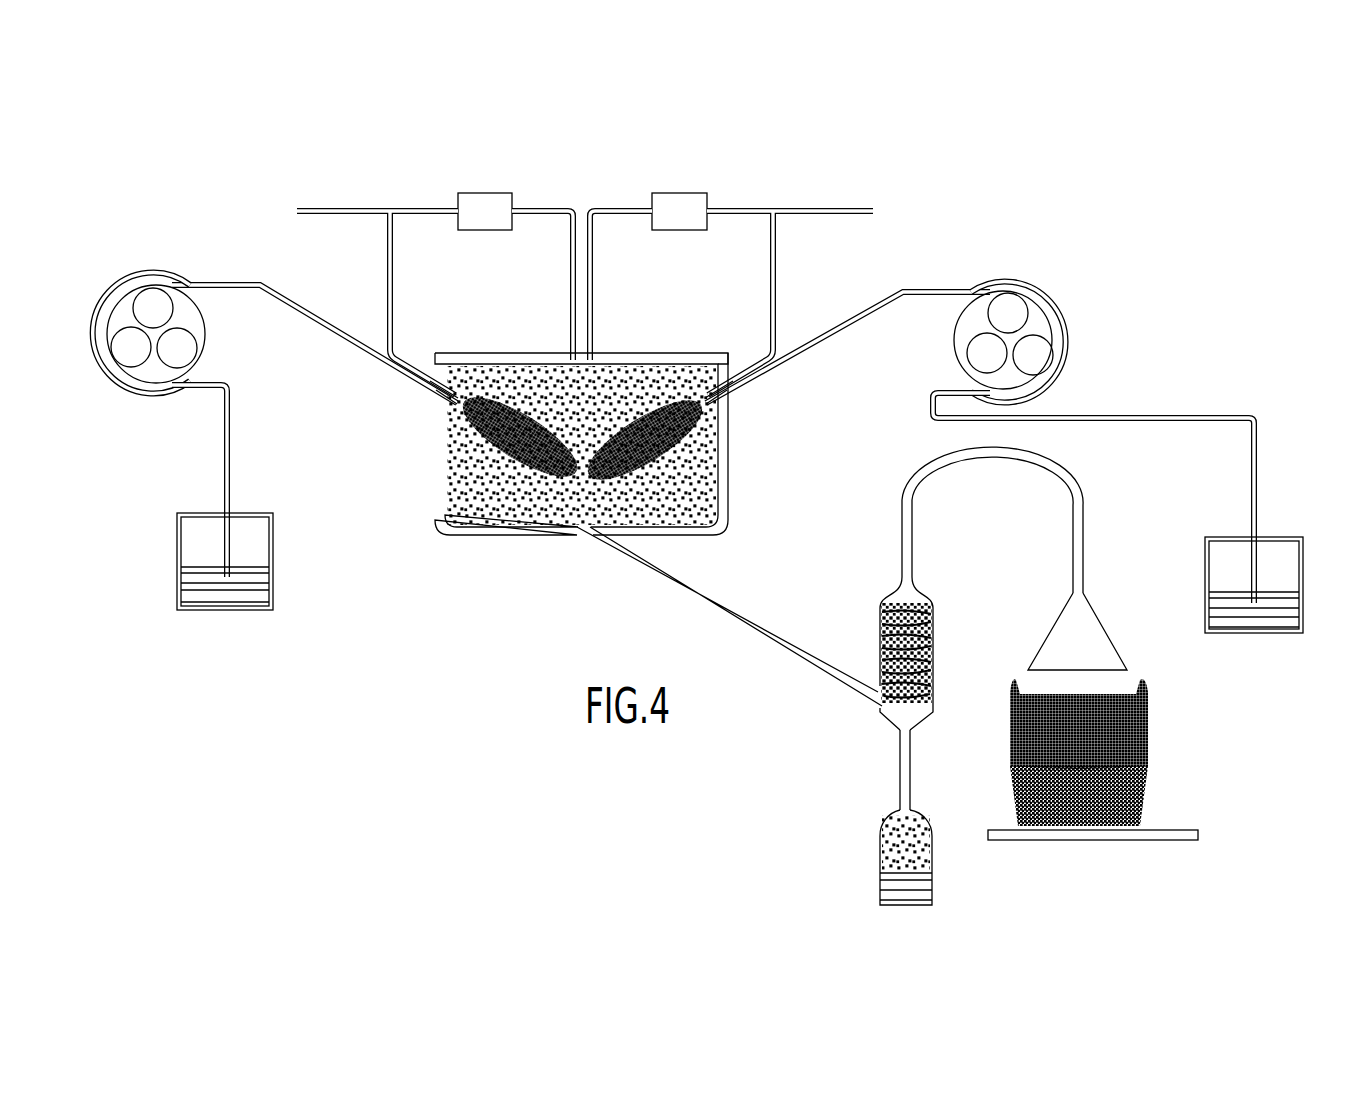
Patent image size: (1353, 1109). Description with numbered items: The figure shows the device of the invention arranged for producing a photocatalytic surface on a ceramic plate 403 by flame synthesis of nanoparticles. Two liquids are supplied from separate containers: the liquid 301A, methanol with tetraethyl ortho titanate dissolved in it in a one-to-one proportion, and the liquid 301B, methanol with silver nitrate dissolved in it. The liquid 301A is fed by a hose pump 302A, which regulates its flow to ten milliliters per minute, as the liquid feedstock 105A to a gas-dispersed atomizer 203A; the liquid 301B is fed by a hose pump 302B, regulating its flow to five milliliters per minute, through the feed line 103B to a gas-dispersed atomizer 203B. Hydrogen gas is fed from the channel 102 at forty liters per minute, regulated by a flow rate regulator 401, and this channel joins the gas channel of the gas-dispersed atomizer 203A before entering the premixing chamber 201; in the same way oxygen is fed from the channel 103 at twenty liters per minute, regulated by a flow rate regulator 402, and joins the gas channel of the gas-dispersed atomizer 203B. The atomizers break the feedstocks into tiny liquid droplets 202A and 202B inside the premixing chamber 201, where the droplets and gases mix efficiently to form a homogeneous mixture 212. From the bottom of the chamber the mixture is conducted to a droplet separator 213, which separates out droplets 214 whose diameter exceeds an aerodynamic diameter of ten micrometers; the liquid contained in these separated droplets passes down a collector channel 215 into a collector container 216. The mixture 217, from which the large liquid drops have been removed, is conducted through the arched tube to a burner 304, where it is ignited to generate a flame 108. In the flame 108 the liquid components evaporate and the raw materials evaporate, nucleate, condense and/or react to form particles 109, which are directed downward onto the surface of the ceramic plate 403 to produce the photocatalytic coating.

The channel 102 is at (297, 210).
The channel 103 is at (873, 212).
The liquid feedstock 105A is at (330, 327).
The liquid feedstock line 103B is at (838, 331).
The flame 108 is at (1147, 712).
The particles 109 is at (1133, 813).
The premixing chamber 201 is at (468, 361).
The liquid droplets 202A is at (520, 410).
The liquid droplets 202B is at (643, 413).
The gas-dispersed atomizer 203A is at (402, 382).
The gas-dispersed atomizer 203B is at (760, 385).
The homogeneous mixture 212 is at (690, 512).
The droplet separator 213 is at (893, 593).
The droplets 214 is at (933, 673).
The collector channel 215 is at (898, 792).
The collector container 216 is at (878, 842).
The mixture from which large liquid drops have been removed 217 is at (1075, 493).
The liquid 301A is at (263, 590).
The liquid 301B is at (1205, 610).
The hose pump 302A is at (110, 289).
The hose pump 302B is at (1053, 297).
The burner 304 is at (1110, 655).
The flow rate regulator 401 is at (493, 196).
The flow rate regulator 402 is at (677, 196).
The ceramic plate 403 is at (1133, 842).